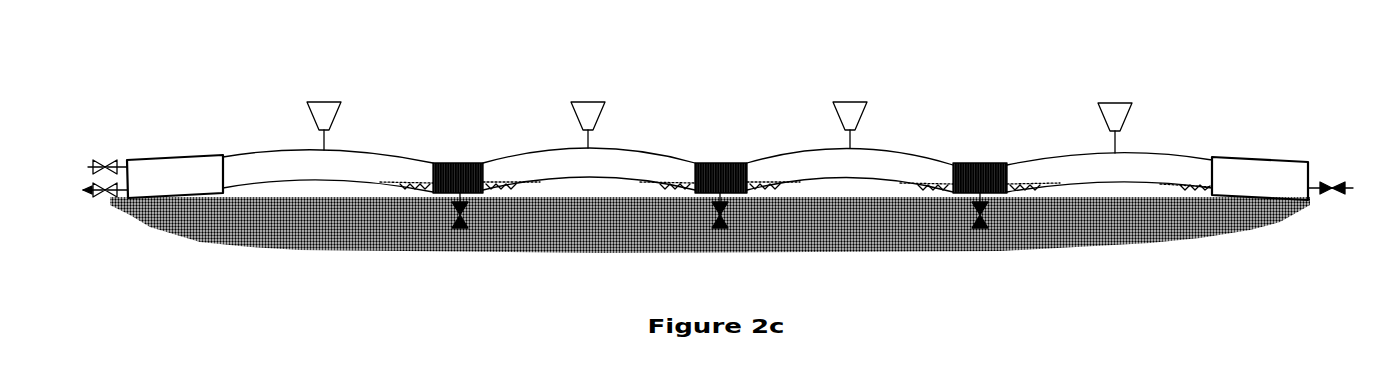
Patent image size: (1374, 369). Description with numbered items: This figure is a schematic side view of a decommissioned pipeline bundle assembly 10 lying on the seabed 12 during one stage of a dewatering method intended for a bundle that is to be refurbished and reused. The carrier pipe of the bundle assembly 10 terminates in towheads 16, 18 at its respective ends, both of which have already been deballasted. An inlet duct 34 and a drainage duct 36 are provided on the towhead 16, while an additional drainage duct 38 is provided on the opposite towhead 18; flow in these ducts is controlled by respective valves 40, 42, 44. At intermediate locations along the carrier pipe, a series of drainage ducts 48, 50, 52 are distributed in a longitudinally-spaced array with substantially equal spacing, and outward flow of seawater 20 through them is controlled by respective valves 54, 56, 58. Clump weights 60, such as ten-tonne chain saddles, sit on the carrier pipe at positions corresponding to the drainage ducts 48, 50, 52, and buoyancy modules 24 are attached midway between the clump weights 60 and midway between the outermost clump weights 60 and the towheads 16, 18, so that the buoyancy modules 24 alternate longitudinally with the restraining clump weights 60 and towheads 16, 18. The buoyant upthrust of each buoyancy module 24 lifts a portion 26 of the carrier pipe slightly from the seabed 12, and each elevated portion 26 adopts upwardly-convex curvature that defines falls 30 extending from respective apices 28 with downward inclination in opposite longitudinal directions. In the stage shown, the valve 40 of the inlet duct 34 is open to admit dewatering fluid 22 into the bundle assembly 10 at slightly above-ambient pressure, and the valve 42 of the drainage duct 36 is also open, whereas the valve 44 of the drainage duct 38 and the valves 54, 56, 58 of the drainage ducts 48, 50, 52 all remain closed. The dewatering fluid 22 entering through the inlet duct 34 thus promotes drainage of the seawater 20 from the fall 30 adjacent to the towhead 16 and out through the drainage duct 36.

The bundle assembly 10 is at (988, 76).
The seabed 12 is at (1172, 228).
The towhead 16 is at (183, 157).
The towhead 18 is at (1268, 158).
The seawater 20 is at (497, 190).
The dewatering fluid 22 is at (242, 170).
The buoyancy module 24 is at (327, 110).
The elevated portion 26 is at (326, 190).
The apex 28 is at (322, 150).
The fall 30 is at (270, 153).
The inlet duct 34 is at (86, 158).
The drainage duct 36 is at (126, 196).
The drainage duct 38 is at (1310, 194).
The valve 40 is at (110, 152).
The valve 42 is at (97, 194).
The valve 44 is at (1338, 185).
The drainage duct 48 is at (461, 228).
The drainage duct 50 is at (719, 228).
The drainage duct 52 is at (981, 228).
The valve 54 is at (455, 212).
The valve 56 is at (715, 212).
The valve 58 is at (975, 212).
The clump weight 60 is at (457, 163).